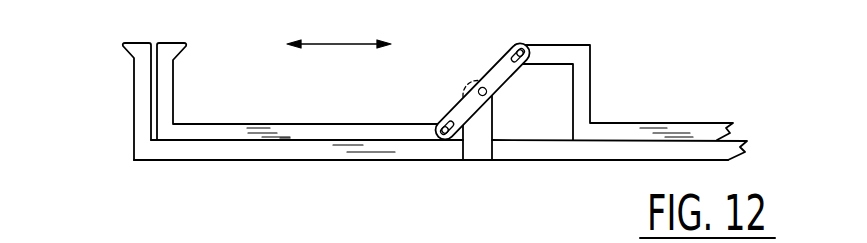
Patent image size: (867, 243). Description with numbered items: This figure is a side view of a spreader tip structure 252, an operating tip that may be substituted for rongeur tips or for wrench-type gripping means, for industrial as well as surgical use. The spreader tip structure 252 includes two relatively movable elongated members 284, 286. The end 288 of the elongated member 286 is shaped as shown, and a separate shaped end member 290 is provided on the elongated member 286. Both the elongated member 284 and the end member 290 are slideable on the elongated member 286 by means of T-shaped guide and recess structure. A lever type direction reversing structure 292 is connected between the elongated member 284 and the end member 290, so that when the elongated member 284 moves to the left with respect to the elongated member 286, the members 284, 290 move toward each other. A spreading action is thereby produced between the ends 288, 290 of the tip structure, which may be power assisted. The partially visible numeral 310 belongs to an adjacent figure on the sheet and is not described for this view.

The spreader tip structure 252 is at (313, 162).
The elongated member 284 is at (637, 122).
The elongated member 286 is at (597, 162).
The end of the member 288 is at (133, 81).
The end member 290 is at (173, 93).
The lever type direction reversing structure 292 is at (488, 67).
The partial numeral of adjacent figure 310 is at (170, 241).